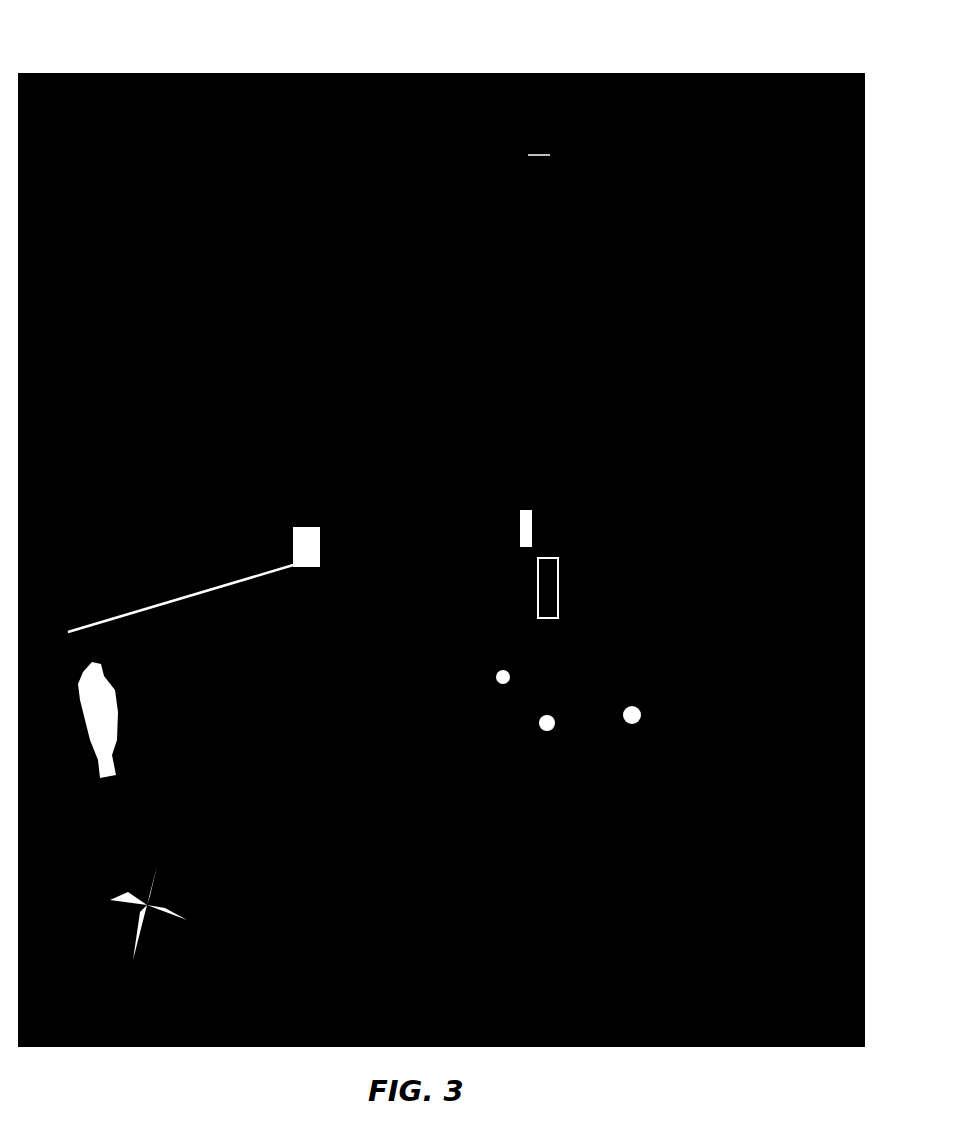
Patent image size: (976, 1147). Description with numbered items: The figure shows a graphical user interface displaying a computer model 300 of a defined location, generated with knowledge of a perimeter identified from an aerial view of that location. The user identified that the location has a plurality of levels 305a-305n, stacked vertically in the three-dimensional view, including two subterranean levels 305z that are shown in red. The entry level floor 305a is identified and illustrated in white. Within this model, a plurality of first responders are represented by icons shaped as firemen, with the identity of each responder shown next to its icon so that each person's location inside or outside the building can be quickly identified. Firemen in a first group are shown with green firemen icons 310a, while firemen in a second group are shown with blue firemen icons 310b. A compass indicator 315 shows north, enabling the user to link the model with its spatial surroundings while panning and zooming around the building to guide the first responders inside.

The computer model 300 is at (126, 44).
The level 305n is at (553, 165).
The entry level floor 305a is at (538, 535).
The subterranean level 305z is at (558, 595).
The green firemen icon 310a is at (643, 838).
The blue firemen icon 310b is at (557, 850).
The compass indicator 315 is at (170, 923).